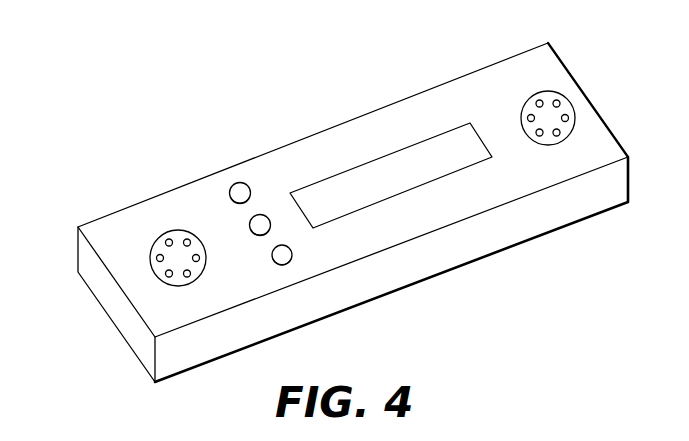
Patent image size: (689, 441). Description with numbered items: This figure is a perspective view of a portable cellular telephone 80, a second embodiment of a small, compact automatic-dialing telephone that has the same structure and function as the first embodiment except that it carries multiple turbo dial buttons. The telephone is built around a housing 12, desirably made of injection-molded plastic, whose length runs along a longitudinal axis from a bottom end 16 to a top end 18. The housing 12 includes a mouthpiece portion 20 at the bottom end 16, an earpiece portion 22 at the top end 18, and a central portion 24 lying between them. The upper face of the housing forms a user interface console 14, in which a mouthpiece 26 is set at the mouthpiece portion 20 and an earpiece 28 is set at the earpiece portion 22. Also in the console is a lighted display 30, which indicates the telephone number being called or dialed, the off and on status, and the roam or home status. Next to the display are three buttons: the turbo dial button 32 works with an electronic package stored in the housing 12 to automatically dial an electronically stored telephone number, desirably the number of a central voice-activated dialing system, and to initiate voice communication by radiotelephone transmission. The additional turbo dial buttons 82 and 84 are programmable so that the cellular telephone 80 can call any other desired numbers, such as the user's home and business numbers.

The housing 12 is at (437, 82).
The user interface console 14 is at (202, 193).
The bottom end 16 is at (92, 257).
The top end 18 is at (618, 137).
The mouthpiece portion 20 is at (167, 313).
The earpiece portion 22 is at (548, 175).
The central portion 24 is at (388, 237).
The mouthpiece 26 is at (197, 277).
The earpiece 28 is at (547, 97).
The lighted display 30 is at (412, 143).
The turbo dial button 32 is at (249, 229).
The portable cellular telephone 80 is at (293, 88).
The additional turbo dial button 82 is at (240, 182).
The additional turbo dial button 84 is at (293, 257).